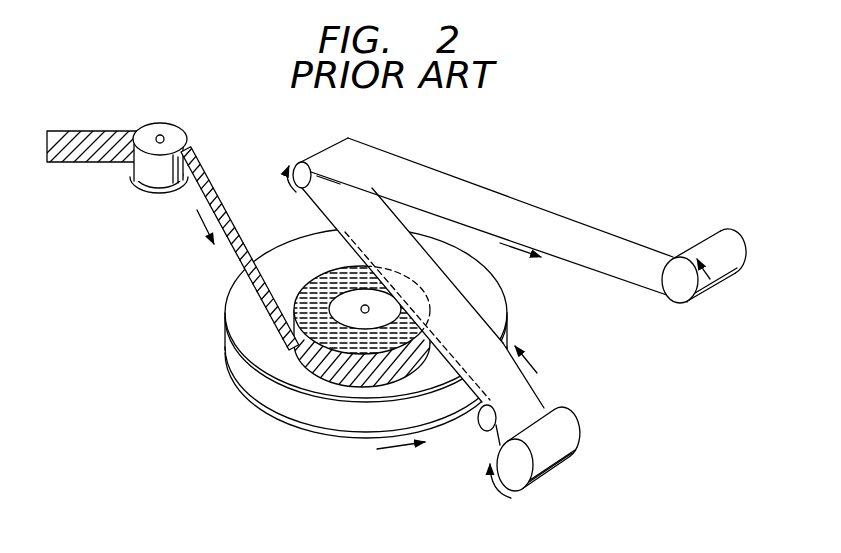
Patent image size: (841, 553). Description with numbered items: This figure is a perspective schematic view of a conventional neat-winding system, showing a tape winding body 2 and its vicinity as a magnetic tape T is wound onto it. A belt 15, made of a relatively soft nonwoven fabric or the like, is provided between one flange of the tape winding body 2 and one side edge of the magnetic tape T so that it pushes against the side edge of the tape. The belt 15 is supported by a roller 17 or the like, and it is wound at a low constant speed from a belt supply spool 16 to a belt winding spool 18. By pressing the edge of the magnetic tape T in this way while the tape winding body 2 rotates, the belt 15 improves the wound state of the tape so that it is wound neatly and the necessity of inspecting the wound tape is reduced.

The tape winding body 2 is at (268, 373).
The belt 15 is at (567, 223).
The belt supply spool 16 is at (582, 443).
The roller 17 is at (300, 164).
The belt winding spool 18 is at (683, 296).
The magnetic tape T is at (205, 183).